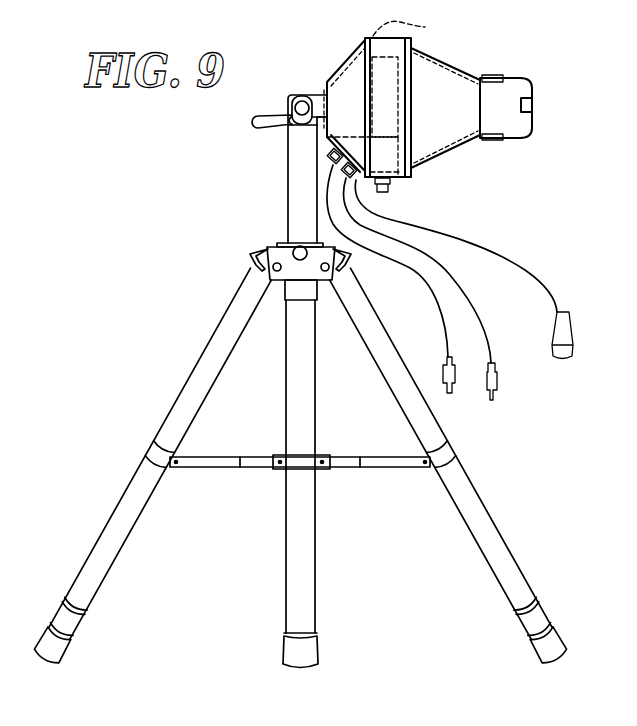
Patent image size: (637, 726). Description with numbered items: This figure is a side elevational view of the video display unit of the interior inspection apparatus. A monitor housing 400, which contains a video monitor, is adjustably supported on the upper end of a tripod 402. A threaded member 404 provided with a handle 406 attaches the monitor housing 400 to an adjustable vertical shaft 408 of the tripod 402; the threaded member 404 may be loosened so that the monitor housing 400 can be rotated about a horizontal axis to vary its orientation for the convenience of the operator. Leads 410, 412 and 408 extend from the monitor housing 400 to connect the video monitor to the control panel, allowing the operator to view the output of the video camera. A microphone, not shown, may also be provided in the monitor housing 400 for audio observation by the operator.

The monitor housing 400 is at (428, 106).
The tripod 402 is at (231, 310).
The threaded member 404 is at (300, 101).
The handle 406 is at (267, 127).
The adjustable vertical shaft 408 is at (414, 278).
The lead 410 is at (466, 291).
The lead 412 is at (465, 238).